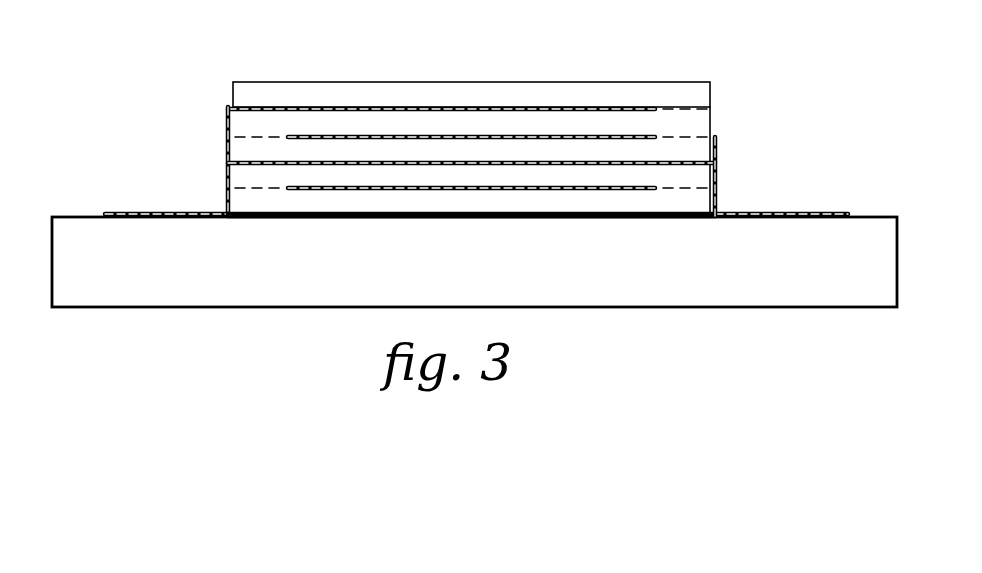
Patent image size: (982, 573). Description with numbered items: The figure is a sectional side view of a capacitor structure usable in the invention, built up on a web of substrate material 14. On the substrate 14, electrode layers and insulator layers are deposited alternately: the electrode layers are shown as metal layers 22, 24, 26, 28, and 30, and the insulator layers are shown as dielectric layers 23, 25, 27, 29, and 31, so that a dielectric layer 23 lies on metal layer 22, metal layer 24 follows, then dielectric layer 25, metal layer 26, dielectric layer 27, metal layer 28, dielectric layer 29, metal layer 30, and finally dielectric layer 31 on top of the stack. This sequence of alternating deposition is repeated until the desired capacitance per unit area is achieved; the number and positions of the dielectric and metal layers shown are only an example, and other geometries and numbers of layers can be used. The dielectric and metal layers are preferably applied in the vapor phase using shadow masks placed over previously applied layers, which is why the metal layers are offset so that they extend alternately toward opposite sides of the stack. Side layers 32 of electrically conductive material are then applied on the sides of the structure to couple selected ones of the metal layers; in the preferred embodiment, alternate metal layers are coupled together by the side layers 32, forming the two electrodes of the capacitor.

The substrate 14 is at (783, 295).
The metal layer 22 is at (268, 216).
The dielectric layer 23 is at (299, 202).
The metal layer 24 is at (350, 187).
The dielectric layer 25 is at (402, 176).
The metal layer 26 is at (481, 160).
The dielectric layer 27 is at (543, 152).
The metal layer 28 is at (585, 140).
The dielectric layer 29 is at (608, 125).
The metal layer 30 is at (414, 107).
The dielectric layer 31 is at (525, 90).
The side layers 32 is at (228, 138).